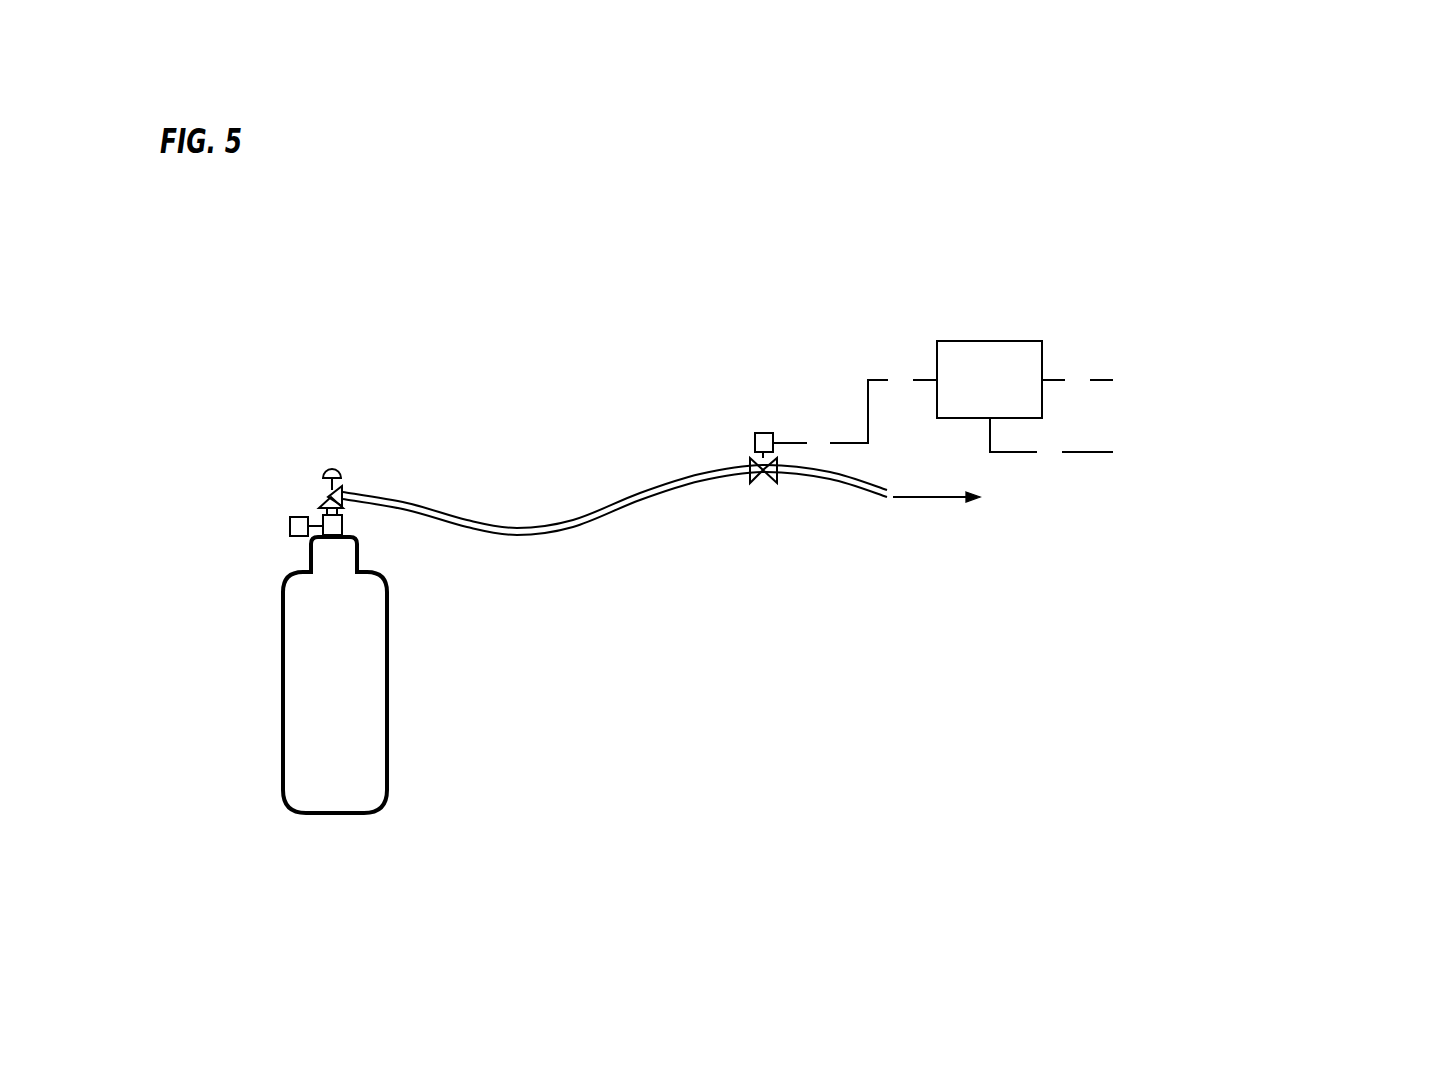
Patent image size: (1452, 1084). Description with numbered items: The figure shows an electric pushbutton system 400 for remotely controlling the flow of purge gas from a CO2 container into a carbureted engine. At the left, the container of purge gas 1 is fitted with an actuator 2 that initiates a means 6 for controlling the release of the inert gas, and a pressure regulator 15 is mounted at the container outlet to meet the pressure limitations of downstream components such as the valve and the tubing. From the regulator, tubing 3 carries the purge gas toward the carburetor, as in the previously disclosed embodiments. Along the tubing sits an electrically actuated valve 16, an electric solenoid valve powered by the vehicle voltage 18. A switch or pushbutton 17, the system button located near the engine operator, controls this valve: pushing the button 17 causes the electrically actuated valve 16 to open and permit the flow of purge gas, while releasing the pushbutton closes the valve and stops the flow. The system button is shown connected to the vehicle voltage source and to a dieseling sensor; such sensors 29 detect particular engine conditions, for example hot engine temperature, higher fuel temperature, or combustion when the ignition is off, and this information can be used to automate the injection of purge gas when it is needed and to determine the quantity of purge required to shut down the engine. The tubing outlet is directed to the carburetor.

The container of purge gas 1 is at (282, 735).
The actuator 2 is at (290, 538).
The tubing 3 is at (385, 495).
The means for controlling the release of the inert gas 6 is at (343, 525).
The pressure regulator 15 is at (320, 478).
The electrically actuated valve 16 is at (763, 433).
The pushbutton 17 is at (992, 340).
The vehicle voltage 18 is at (880, 380).
The sensors 29 is at (1082, 452).
The electric pushbutton system 400 is at (662, 618).